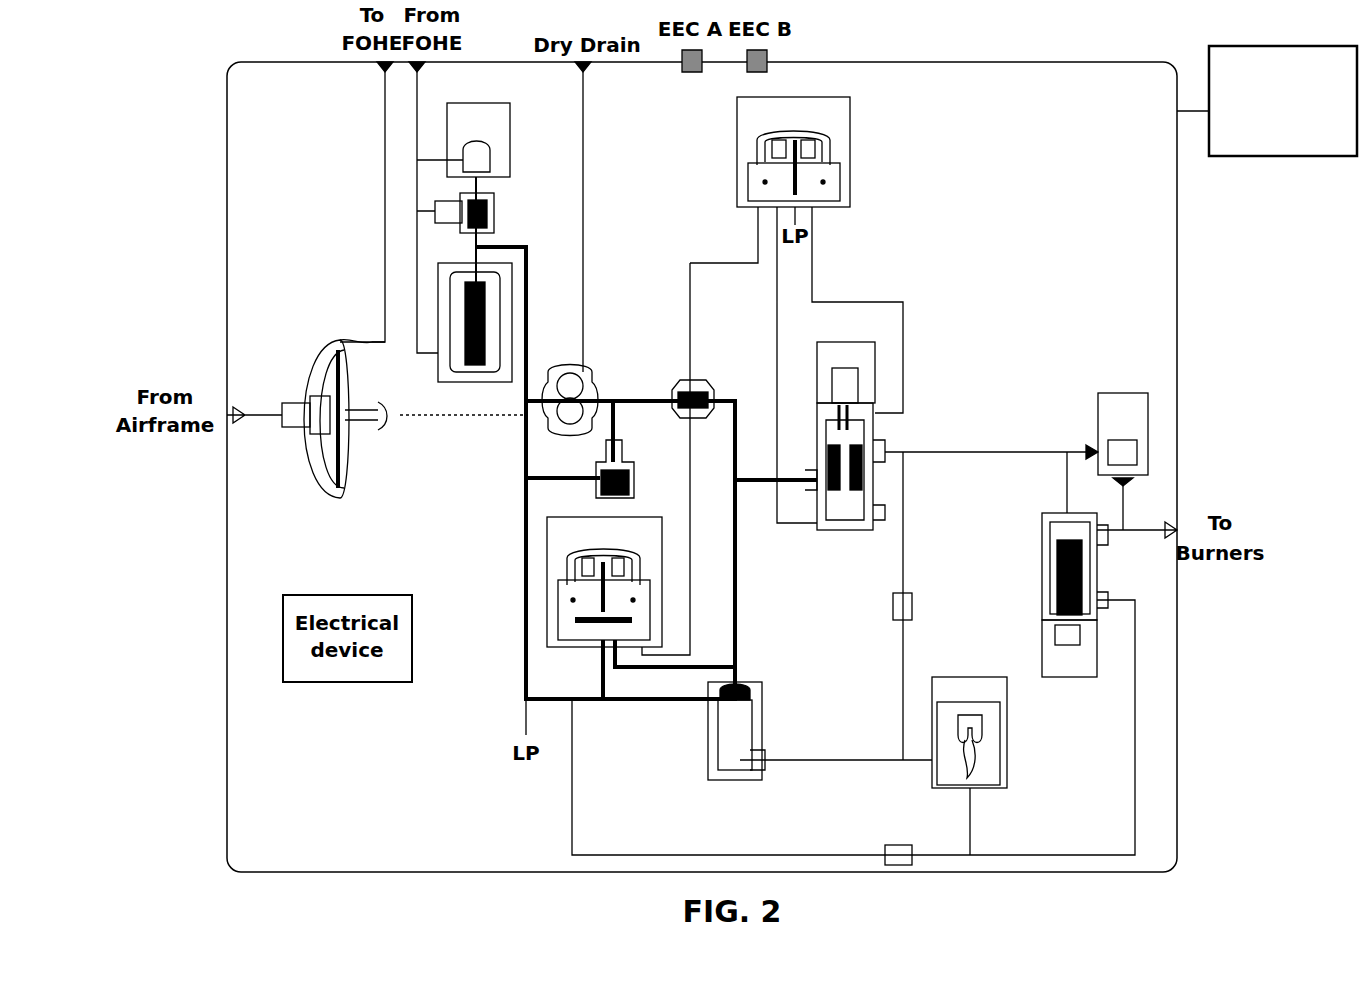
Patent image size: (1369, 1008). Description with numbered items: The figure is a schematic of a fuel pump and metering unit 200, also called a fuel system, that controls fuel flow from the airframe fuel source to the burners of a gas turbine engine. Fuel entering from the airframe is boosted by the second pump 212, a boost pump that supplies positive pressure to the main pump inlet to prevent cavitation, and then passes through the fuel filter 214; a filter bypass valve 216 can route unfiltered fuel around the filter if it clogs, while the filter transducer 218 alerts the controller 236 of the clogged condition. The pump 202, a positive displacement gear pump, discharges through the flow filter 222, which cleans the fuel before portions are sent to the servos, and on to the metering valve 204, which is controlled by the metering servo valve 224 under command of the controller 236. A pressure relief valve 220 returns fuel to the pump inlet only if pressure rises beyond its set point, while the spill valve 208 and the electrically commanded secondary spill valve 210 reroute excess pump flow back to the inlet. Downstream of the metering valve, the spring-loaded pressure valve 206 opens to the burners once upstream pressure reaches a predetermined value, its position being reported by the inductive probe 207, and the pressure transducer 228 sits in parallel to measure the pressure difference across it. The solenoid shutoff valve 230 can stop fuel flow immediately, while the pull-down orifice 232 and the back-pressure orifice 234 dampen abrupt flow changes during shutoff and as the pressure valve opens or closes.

The fuel pump and metering unit 200 is at (160, 146).
The pump 202 is at (562, 424).
The metering valve 204 is at (822, 424).
The pressure valve 206 is at (1042, 545).
The inductive probe 207 is at (1042, 640).
The spill valve 208 is at (762, 718).
The secondary spill valve 210 is at (674, 524).
The second pump 212 is at (336, 340).
The fuel filter 214 is at (470, 376).
The filter bypass valve 216 is at (494, 215).
The filter transducer 218 is at (522, 108).
The pressure relief valve 220 is at (634, 482).
The flow filter 222 is at (710, 388).
The metering servo valve 224 is at (862, 102).
The pressure transducer 228 is at (1160, 400).
The shutoff valve 230 is at (1019, 684).
The pull-down orifice 232 is at (912, 606).
The back-pressure orifice 234 is at (898, 845).
The controller 236 is at (1283, 115).